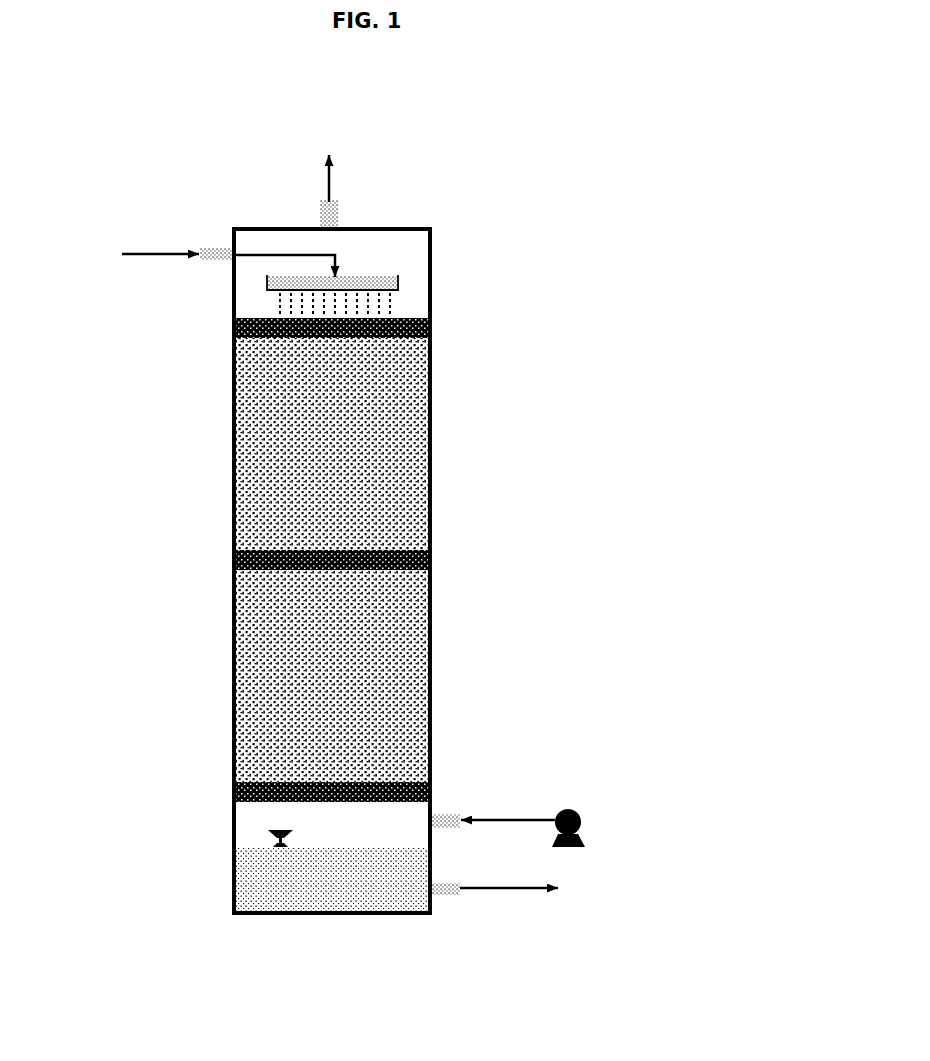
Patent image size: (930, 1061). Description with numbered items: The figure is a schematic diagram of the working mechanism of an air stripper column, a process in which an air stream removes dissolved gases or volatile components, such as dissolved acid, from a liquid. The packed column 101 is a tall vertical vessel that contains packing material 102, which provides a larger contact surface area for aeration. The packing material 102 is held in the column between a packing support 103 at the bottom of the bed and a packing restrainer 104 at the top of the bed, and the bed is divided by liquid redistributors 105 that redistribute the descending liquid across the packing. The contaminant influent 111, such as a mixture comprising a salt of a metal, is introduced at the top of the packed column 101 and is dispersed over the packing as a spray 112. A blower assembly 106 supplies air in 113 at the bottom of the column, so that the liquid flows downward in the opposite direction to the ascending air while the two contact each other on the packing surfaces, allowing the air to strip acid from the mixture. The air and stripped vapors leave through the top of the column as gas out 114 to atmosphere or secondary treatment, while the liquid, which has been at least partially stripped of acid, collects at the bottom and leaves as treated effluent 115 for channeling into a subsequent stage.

The packed column 101 is at (433, 685).
The packing material 102 is at (250, 470).
The packing support 103 is at (231, 790).
The packing restrainer 104 is at (433, 322).
The liquid redistributors 105 is at (433, 555).
The blower assembly 106 is at (583, 807).
The contaminant influent 111 is at (200, 260).
The spray 112 is at (400, 276).
The air in 113 is at (493, 807).
The gas out to atmosphere or secondary treatment 114 is at (356, 178).
The treated effluent 115 is at (523, 890).